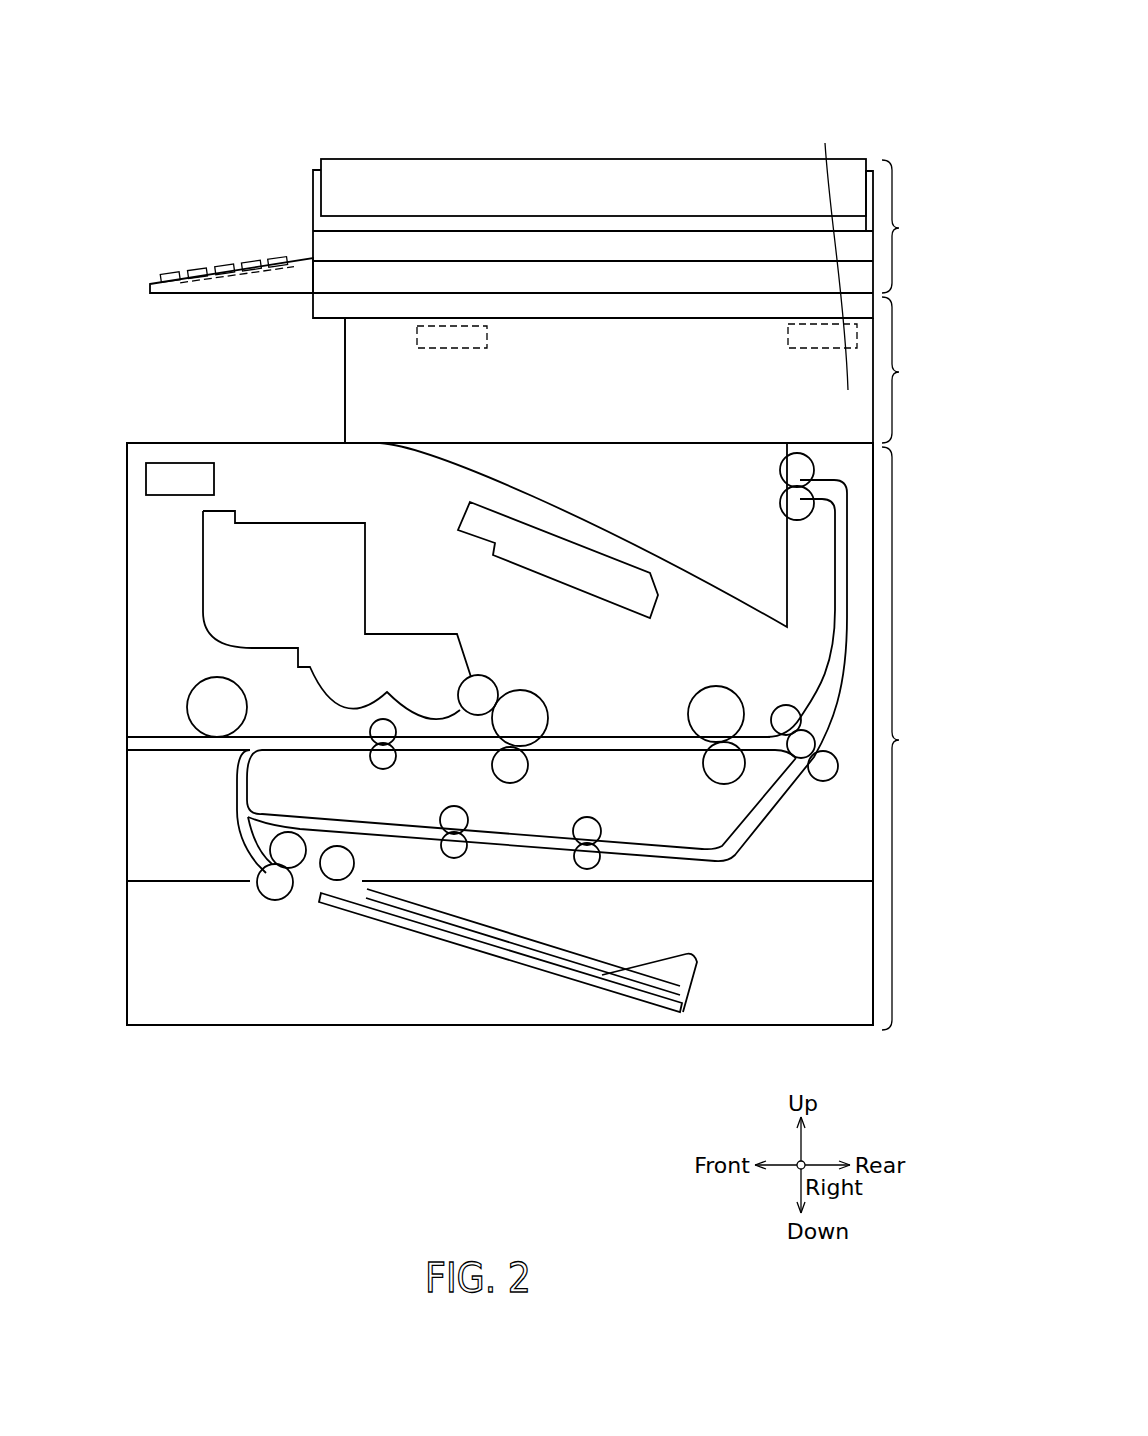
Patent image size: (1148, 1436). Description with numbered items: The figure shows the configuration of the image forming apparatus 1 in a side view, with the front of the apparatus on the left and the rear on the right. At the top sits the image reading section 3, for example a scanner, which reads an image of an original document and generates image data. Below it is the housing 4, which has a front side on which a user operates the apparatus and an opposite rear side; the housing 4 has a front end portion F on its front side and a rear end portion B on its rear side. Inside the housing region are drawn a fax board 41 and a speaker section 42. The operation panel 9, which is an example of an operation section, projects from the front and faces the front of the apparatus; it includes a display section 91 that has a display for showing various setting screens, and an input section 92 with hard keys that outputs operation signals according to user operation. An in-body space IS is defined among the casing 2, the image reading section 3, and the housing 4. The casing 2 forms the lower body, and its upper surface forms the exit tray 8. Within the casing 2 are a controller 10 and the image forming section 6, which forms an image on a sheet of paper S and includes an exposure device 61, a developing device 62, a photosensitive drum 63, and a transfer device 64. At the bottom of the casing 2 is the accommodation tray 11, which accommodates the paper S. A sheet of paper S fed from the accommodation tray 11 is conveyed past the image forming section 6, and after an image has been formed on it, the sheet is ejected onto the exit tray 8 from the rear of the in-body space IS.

The image forming apparatus 1 is at (749, 100).
The casing 2 is at (525, 738).
The image reading section 3 is at (618, 238).
The housing 4 is at (634, 370).
The image forming section 6 is at (600, 628).
The exit tray 8 is at (630, 493).
The operation panel 9 is at (231, 229).
The controller 10 is at (158, 478).
The accommodation tray 11 is at (155, 945).
The fax board 41 is at (800, 324).
The speaker section 42 is at (462, 326).
The exposure device 61 is at (463, 517).
The developing device 62 is at (485, 677).
The photosensitive drum 63 is at (523, 692).
The transfer device 64 is at (493, 767).
The display section 91 is at (210, 271).
The input section 92 is at (278, 262).
The rear end portion B is at (831, 251).
The front end portion F is at (367, 348).
The in-body space IS is at (397, 385).
The paper S is at (543, 942).